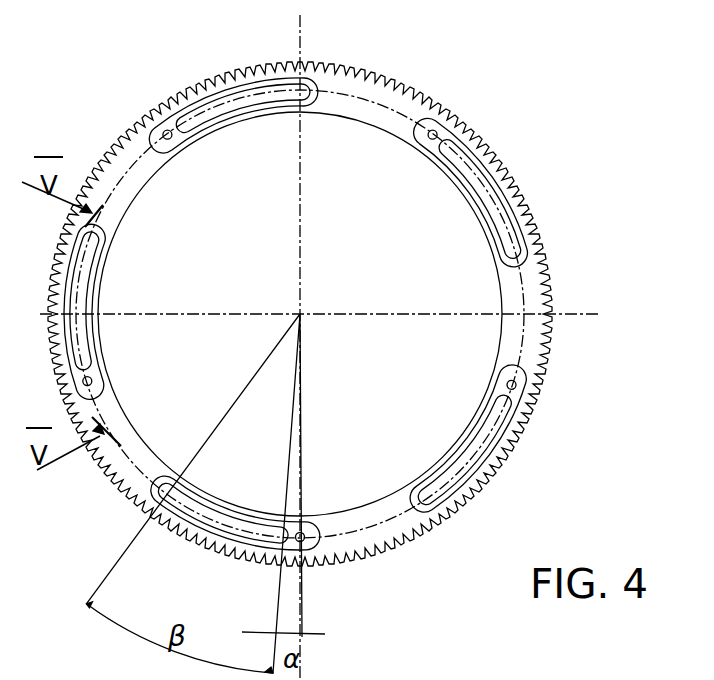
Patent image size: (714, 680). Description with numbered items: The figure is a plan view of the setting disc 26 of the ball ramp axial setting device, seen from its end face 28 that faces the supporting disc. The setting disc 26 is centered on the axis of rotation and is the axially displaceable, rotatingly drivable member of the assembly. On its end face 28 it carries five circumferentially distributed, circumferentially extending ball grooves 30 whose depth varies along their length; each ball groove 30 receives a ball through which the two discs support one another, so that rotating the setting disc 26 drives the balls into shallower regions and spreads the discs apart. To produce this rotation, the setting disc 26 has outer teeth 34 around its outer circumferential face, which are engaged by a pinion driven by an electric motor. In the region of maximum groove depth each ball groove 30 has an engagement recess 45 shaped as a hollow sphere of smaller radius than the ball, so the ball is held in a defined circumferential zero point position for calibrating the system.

The setting disc 26 is at (397, 75).
The end face 28 is at (532, 337).
The ball groove 30 is at (487, 185).
The outer teeth 34 is at (543, 255).
The engagement recess 45 is at (515, 388).